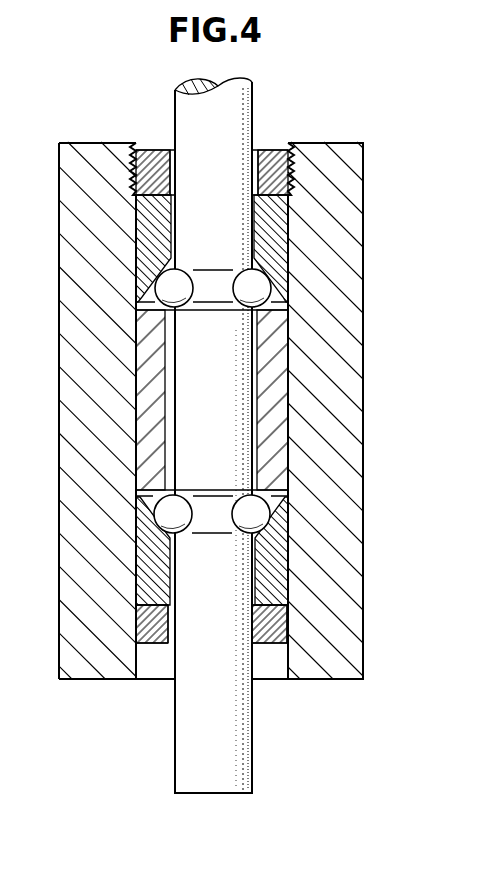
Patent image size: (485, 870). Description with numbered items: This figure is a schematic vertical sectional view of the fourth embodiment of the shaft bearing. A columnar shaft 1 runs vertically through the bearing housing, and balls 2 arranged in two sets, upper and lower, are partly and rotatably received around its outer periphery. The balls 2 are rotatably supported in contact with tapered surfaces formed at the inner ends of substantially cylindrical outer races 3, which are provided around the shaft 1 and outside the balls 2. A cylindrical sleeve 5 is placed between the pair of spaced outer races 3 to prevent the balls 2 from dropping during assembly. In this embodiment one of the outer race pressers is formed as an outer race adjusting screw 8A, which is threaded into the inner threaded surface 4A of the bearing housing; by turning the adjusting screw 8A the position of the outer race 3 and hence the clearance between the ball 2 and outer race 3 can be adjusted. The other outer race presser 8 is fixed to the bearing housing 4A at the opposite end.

The columnar shaft 1 is at (245, 735).
The balls 2 is at (239, 279).
The outer races 3 is at (283, 243).
The inner threaded surface of the bearing housing 4A is at (58, 330).
The cylindrical sleeve 5 is at (285, 413).
The outer race presser 8 is at (274, 644).
The outer race adjusting screw 8A is at (271, 152).